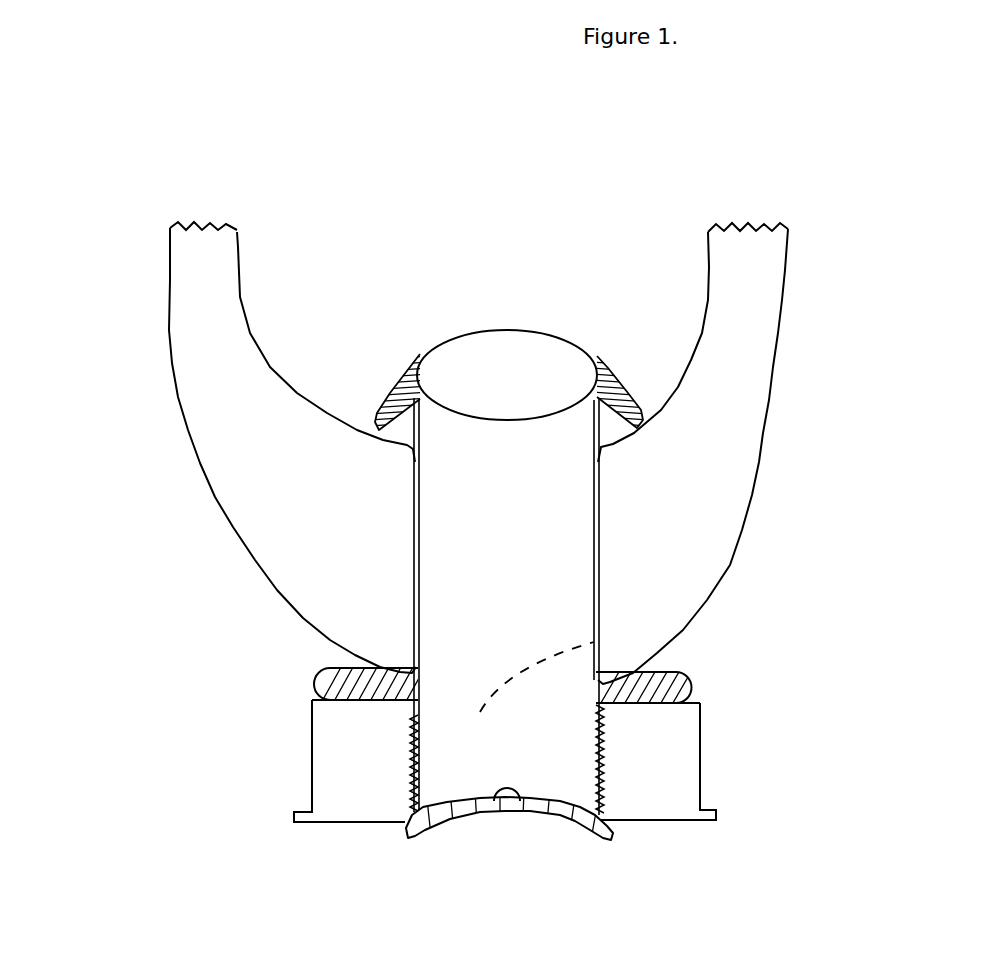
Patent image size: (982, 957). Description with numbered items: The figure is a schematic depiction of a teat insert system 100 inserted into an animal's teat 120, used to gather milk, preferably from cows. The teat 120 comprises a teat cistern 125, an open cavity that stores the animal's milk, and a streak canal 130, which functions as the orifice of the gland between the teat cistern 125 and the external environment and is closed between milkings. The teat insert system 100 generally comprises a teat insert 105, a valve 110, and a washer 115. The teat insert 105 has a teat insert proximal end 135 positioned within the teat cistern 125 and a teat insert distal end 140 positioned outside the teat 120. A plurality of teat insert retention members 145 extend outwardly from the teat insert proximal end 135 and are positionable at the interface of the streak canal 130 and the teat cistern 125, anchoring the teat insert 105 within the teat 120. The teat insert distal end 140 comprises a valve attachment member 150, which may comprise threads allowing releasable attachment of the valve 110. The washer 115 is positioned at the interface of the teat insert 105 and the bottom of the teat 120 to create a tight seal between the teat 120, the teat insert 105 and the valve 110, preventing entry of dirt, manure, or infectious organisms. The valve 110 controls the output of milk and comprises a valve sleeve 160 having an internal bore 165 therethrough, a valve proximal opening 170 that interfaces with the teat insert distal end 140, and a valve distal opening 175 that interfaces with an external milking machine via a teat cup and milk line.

The teat insert system 100 is at (454, 562).
The teat insert 105 is at (431, 581).
The valve 110 is at (572, 769).
The washer 115 is at (688, 672).
The teat 120 is at (478, 453).
The teat cistern 125 is at (326, 333).
The streak canal 130 is at (413, 527).
The teat insert proximal end 135 is at (567, 428).
The teat insert distal end 140 is at (437, 790).
The teat insert retention member 145 is at (392, 393).
The valve attachment member 150 is at (408, 756).
The valve sleeve 160 is at (505, 761).
The internal bore 165 is at (537, 694).
The valve proximal opening 170 is at (601, 639).
The valve distal opening 175 is at (522, 801).